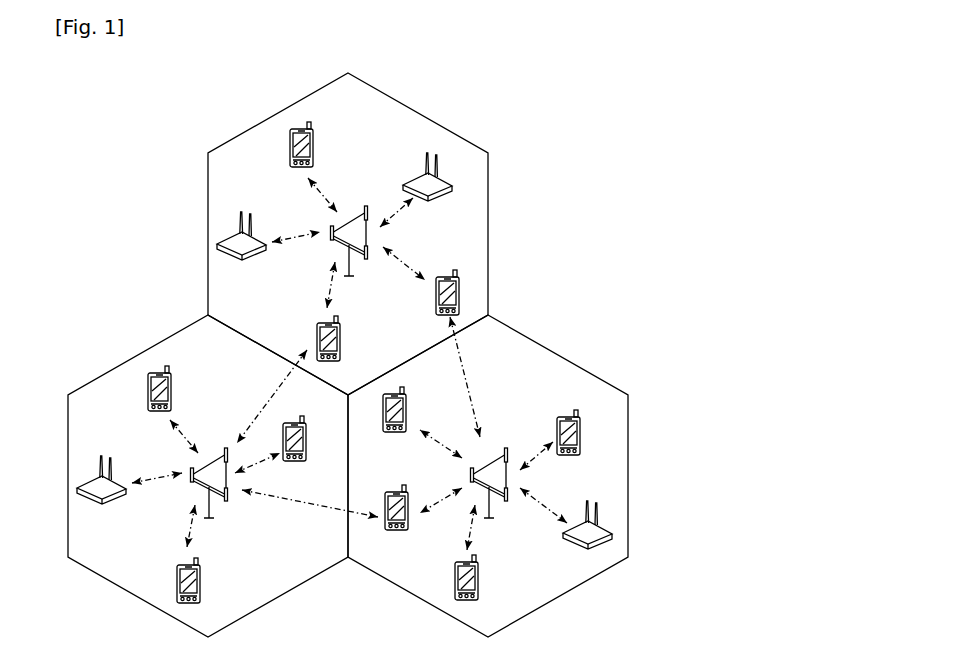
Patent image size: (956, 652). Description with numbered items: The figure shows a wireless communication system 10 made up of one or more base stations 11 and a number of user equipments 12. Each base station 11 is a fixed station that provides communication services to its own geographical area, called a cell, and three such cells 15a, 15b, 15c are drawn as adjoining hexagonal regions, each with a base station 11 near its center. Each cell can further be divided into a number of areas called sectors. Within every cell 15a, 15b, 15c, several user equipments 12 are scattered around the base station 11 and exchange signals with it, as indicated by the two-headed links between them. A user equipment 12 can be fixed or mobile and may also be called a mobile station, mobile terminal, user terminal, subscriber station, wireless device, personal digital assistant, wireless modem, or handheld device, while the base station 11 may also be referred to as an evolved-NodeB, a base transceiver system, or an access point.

The wireless communication system 10 is at (348, 355).
The base station 11 is at (360, 214).
The user equipment 12 is at (313, 147).
The cell 15a is at (489, 222).
The cell 15b is at (577, 364).
The cell 15c is at (118, 366).